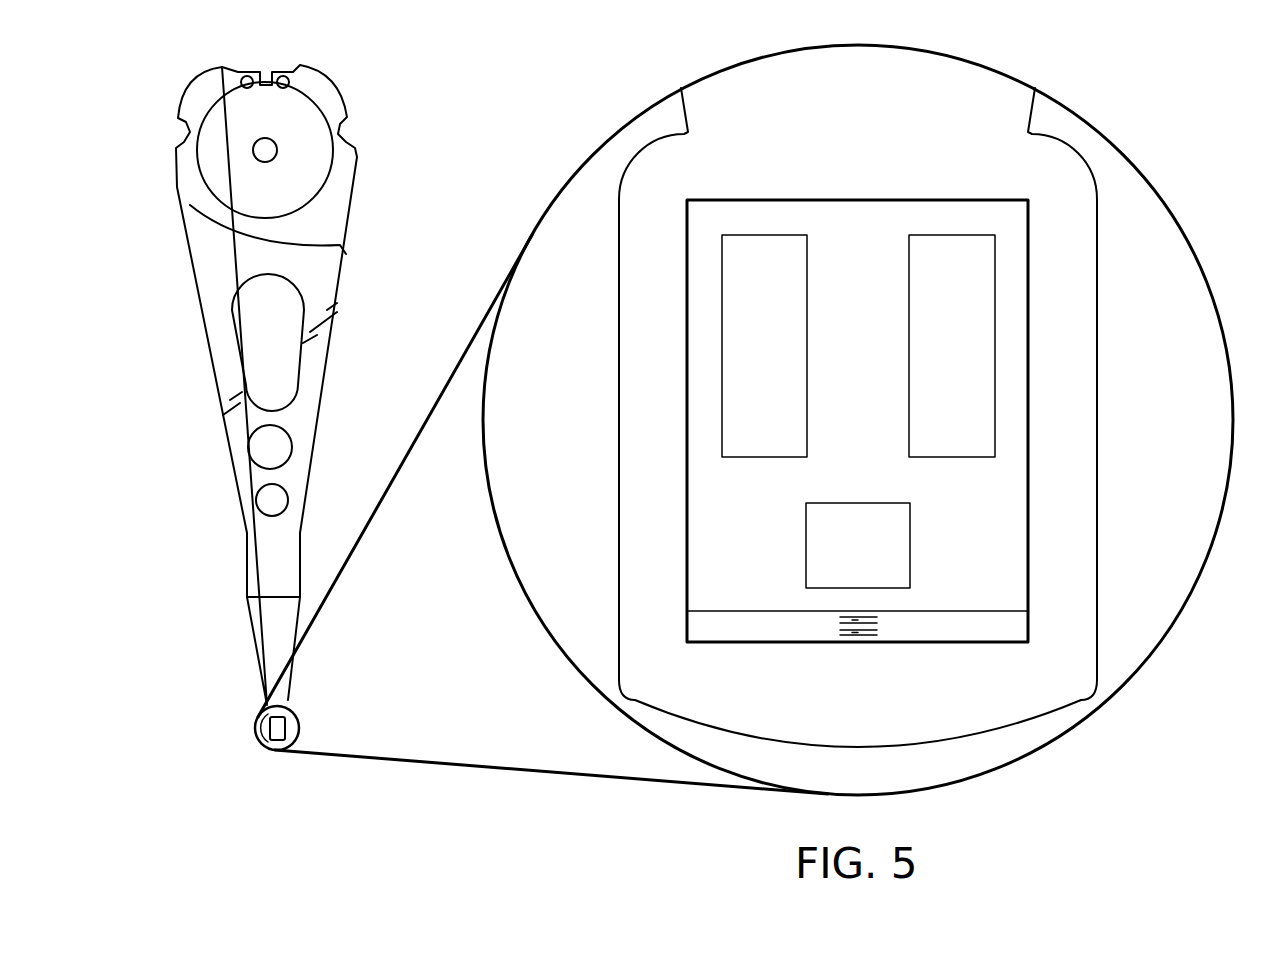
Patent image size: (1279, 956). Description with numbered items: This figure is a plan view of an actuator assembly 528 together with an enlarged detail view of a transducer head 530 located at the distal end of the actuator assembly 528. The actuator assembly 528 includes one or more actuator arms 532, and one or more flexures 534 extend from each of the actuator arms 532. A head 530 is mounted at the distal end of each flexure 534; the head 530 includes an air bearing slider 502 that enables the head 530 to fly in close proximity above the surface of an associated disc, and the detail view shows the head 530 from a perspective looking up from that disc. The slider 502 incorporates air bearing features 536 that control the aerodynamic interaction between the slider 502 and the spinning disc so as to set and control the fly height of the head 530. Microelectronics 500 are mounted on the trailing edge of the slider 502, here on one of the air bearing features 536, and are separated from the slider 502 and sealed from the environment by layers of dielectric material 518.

The actuator assembly 528 is at (395, 184).
The actuator arm 532 is at (198, 282).
The transducer head 530 is at (237, 705).
The flexure 534 is at (292, 683).
The air bearing slider 502 is at (878, 414).
The air bearing feature 536 is at (785, 356).
The dielectric material layers 518 is at (773, 639).
The microelectronics 500 is at (900, 627).